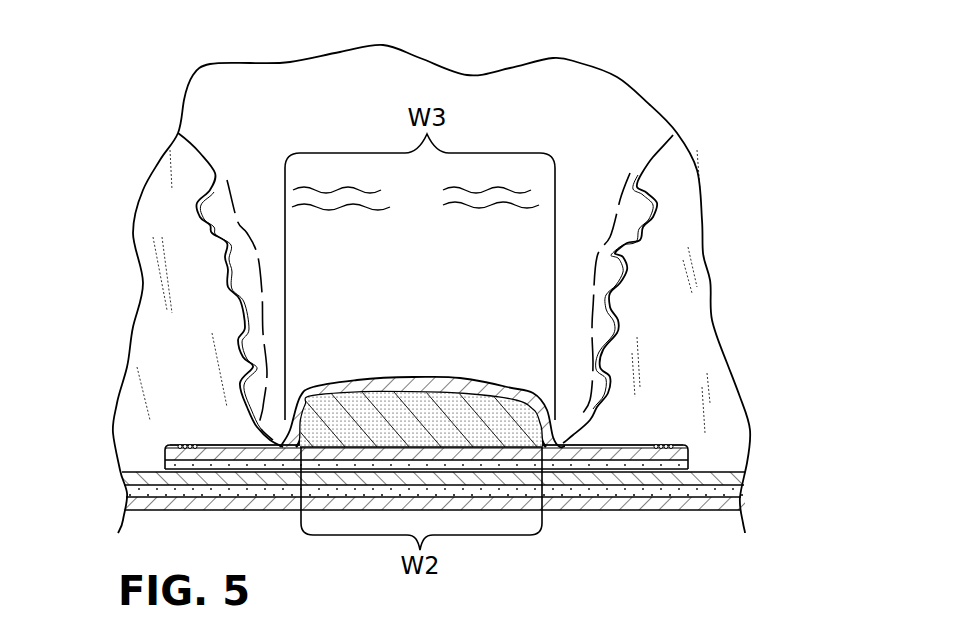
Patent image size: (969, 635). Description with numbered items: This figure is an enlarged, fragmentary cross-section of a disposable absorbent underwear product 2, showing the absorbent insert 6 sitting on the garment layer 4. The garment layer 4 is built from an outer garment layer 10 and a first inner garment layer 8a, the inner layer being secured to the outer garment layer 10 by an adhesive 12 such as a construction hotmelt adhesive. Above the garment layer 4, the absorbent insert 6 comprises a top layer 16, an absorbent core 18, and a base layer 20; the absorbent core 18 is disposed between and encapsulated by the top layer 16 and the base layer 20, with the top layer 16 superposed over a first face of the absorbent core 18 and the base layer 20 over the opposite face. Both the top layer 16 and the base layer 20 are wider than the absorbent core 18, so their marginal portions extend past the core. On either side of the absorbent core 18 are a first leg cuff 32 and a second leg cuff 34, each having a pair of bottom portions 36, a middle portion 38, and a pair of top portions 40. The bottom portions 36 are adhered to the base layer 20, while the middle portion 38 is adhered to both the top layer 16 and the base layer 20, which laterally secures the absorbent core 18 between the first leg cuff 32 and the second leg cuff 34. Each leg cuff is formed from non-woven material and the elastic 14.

The disposable absorbent underwear product 2 is at (615, 77).
The garment layer 4 is at (690, 263).
The absorbent insert 6 is at (683, 347).
The first inner garment layer 8a is at (673, 478).
The outer garment layer 10 is at (592, 503).
The adhesive 12 is at (394, 518).
The elastic 14 is at (187, 443).
The top layer 16 is at (460, 380).
The absorbent core 18 is at (357, 413).
The base layer 20 is at (163, 458).
The first leg cuff 32 is at (172, 205).
The second leg cuff 34 is at (657, 228).
The bottom portions 36 is at (162, 437).
The middle portion 38 is at (215, 403).
The top portions 40 is at (225, 283).